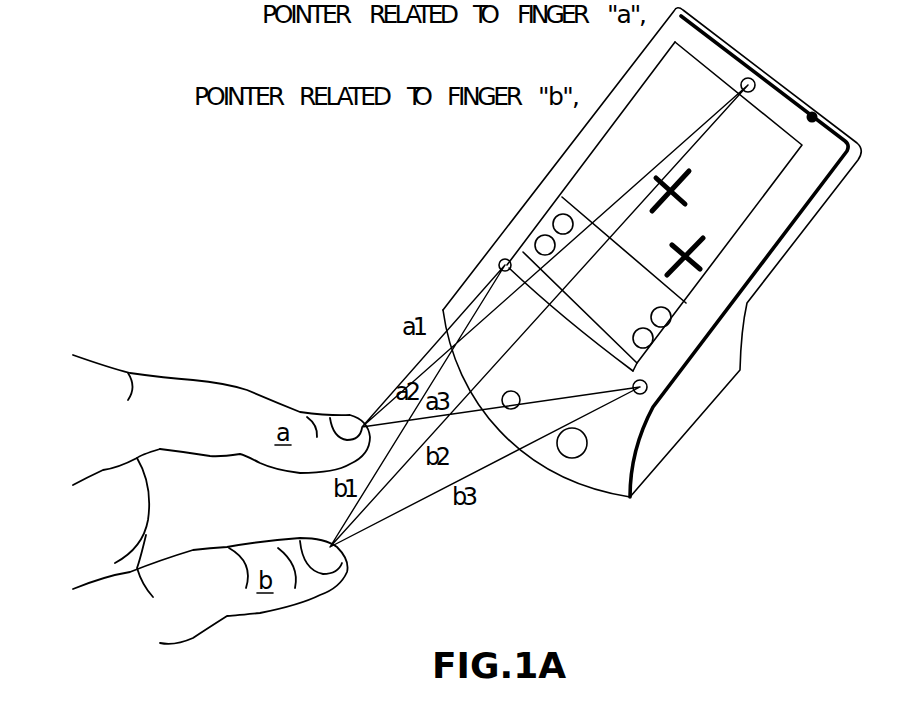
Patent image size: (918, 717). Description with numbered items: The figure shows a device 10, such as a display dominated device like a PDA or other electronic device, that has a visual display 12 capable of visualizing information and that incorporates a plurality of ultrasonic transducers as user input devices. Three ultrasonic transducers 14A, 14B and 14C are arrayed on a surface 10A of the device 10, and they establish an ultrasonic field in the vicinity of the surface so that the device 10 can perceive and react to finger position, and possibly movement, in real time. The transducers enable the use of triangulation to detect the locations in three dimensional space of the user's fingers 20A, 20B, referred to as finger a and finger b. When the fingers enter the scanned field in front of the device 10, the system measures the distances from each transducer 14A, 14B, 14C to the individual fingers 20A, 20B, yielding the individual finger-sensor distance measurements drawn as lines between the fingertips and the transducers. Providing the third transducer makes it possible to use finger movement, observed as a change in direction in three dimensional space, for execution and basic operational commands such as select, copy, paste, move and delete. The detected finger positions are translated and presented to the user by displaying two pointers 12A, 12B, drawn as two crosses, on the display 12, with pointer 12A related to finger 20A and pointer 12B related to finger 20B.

The device 10 is at (776, 273).
The surface of the device 10A is at (588, 490).
The visual display 12 is at (767, 157).
The pointer 12A is at (666, 192).
The pointer 12B is at (671, 250).
The ultrasonic transducer 14A is at (752, 78).
The ultrasonic transducer 14B is at (644, 393).
The ultrasonic transducer 14C is at (503, 258).
The user's finger 20A is at (247, 389).
The user's finger 20B is at (320, 602).